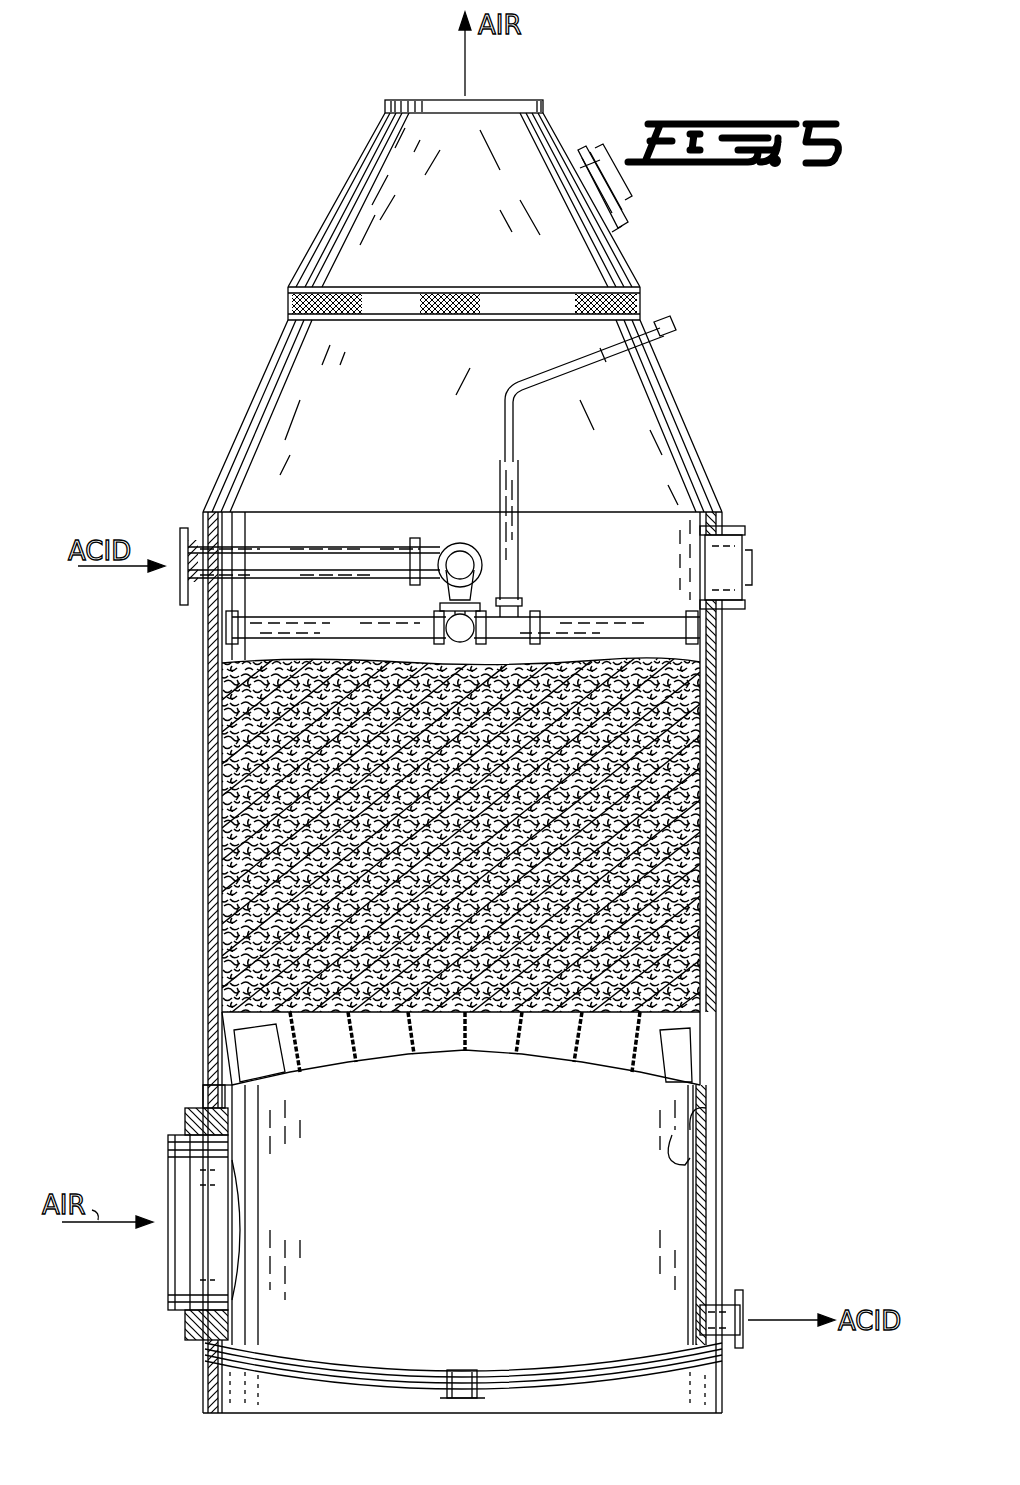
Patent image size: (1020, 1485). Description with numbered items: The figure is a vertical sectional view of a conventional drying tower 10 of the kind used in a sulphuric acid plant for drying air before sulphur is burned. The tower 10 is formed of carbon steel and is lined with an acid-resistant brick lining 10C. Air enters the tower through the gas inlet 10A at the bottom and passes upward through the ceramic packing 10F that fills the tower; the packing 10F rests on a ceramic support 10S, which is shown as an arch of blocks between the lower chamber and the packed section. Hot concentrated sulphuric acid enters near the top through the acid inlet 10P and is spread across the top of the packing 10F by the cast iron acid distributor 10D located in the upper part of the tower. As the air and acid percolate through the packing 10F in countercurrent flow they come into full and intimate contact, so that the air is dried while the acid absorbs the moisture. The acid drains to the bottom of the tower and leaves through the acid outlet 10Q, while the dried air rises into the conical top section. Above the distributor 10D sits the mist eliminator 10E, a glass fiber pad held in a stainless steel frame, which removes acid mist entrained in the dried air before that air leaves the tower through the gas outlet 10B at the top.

The drying tower 10 is at (708, 434).
The gas outlet 10B is at (494, 98).
The mist eliminator 10E is at (385, 302).
The acid inlet 10P is at (182, 530).
The acid distributor 10D is at (232, 655).
The ceramic packing 10F is at (322, 795).
The ceramic support 10S is at (300, 1022).
The acid-resistant brick lining 10C is at (690, 1132).
The gas inlet 10A is at (167, 1163).
The acid outlet 10Q is at (742, 1300).